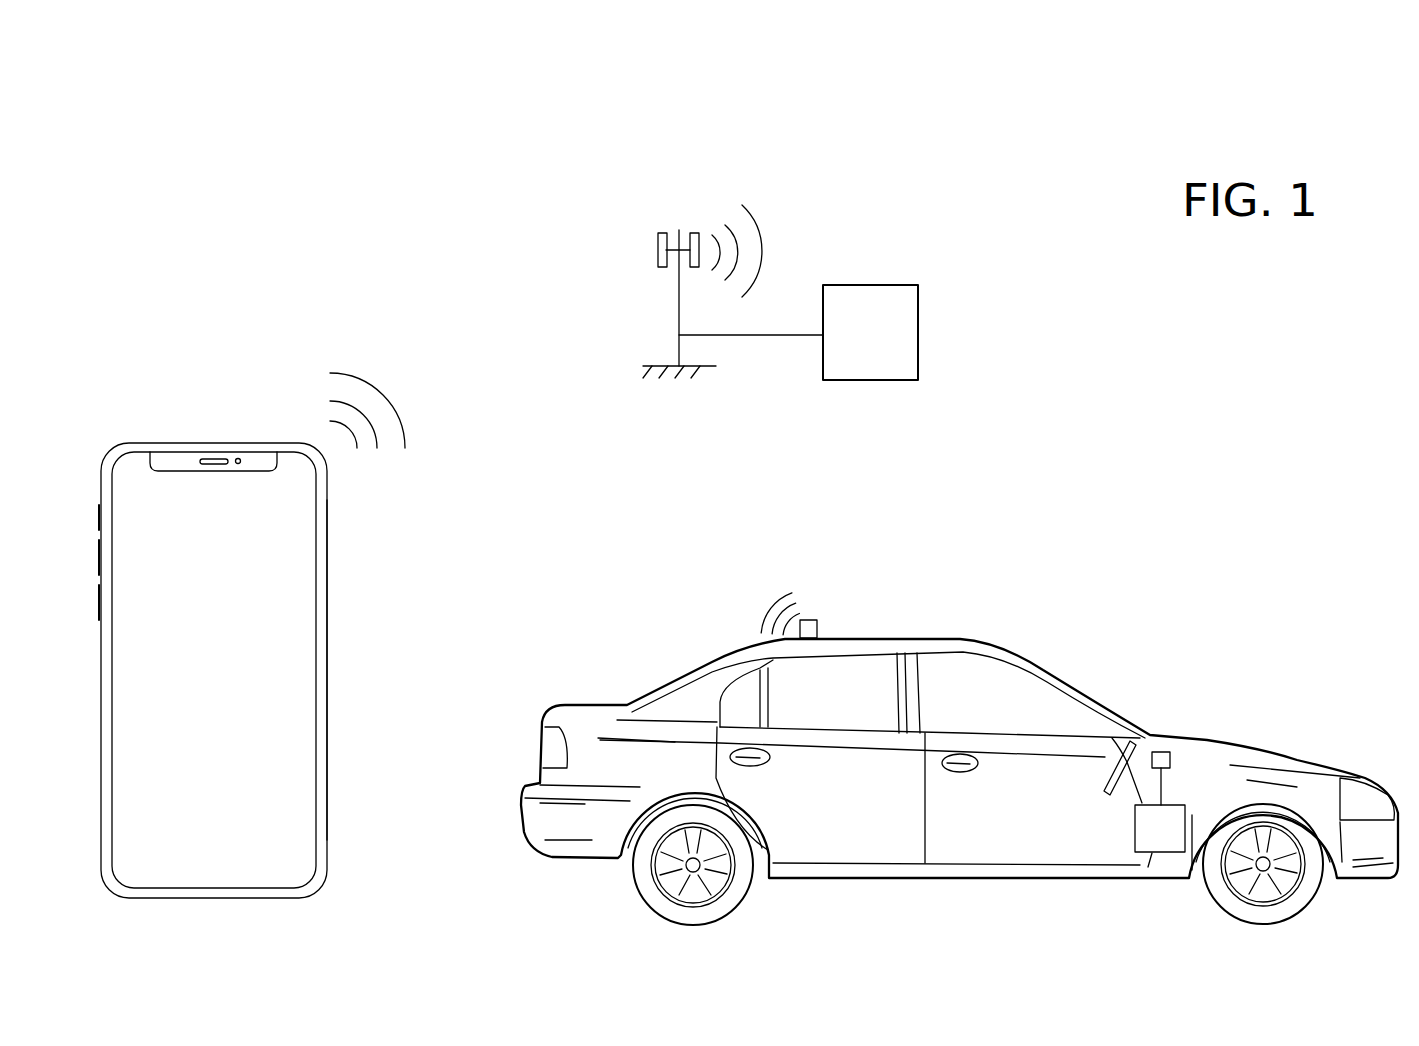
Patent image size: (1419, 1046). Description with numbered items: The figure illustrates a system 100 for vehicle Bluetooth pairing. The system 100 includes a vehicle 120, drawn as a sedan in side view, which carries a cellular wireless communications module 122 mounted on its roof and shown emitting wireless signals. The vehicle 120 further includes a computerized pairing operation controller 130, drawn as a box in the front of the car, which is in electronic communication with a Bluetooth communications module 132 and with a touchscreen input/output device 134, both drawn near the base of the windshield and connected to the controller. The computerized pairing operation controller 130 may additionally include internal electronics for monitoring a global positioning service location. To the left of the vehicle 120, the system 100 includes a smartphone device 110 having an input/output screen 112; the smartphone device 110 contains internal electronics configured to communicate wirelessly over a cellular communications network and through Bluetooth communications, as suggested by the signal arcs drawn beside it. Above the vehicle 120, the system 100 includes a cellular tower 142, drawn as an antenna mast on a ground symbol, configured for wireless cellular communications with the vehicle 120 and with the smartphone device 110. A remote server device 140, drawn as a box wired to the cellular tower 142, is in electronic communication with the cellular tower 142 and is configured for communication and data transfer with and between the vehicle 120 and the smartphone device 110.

The system for vehicle Bluetooth pairing 100 is at (365, 145).
The smartphone device 110 is at (176, 444).
The input/output screen 112 is at (322, 615).
The vehicle 120 is at (938, 638).
The cellular wireless communications module 122 is at (820, 632).
The computerized pairing operation controller 130 is at (1183, 803).
The Bluetooth communications module 132 is at (1162, 751).
The touchscreen input/output device 134 is at (1114, 750).
The remote server device 140 is at (918, 335).
The cellular tower 142 is at (693, 233).